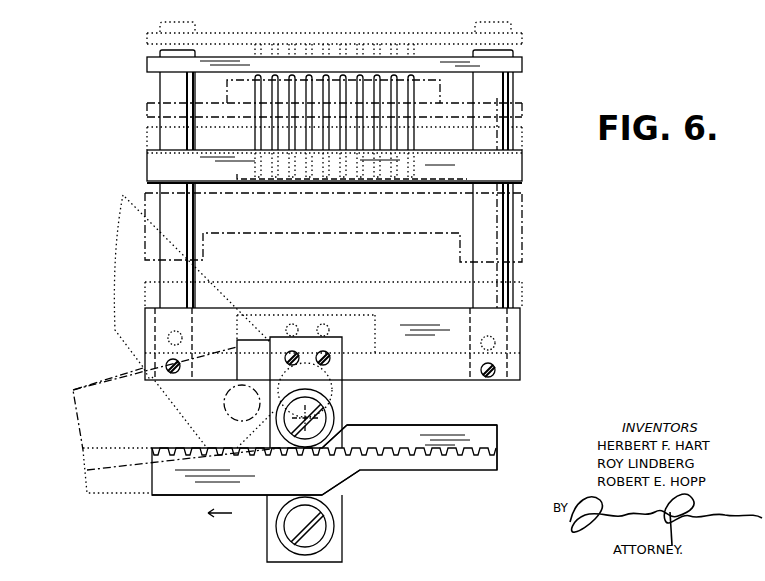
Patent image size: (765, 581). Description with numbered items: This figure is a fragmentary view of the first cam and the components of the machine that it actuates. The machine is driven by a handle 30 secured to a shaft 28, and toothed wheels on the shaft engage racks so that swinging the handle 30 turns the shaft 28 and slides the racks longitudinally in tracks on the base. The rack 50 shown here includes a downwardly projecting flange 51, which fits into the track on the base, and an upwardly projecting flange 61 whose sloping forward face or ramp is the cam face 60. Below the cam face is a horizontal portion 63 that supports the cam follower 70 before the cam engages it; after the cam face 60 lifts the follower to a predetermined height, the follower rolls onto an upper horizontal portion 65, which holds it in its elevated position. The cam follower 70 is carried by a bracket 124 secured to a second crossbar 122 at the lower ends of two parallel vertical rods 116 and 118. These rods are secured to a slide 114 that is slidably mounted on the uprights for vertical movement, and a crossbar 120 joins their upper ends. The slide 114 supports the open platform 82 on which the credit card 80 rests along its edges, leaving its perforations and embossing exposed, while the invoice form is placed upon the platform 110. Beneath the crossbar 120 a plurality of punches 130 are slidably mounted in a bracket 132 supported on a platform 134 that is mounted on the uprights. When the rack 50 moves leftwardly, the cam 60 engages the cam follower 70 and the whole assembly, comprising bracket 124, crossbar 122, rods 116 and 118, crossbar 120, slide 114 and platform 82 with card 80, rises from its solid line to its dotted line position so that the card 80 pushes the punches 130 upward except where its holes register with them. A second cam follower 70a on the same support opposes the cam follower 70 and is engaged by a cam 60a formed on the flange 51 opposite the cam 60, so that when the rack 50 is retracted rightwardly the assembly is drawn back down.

The rod 116 is at (166, 89).
The rod 118 is at (513, 88).
The crossbar 120 is at (522, 66).
The slide 114 is at (522, 170).
The second crossbar 122 is at (520, 333).
The bracket 124 is at (343, 343).
The punches 130 is at (414, 128).
The bracket 132 is at (433, 95).
The platform 134 is at (522, 110).
The platform 110 is at (522, 232).
The credit card 80 is at (428, 182).
The platform 82 is at (412, 190).
The cam follower 70 is at (334, 403).
The second cam follower 70a is at (334, 523).
The cam face 60 is at (345, 426).
The cam 60a is at (352, 476).
The upwardly projecting flange 61 is at (443, 430).
The upper horizontal portion 65 is at (485, 426).
The rack 50 is at (336, 457).
The downwardly projecting flange 51 is at (200, 490).
The horizontal portion 63 is at (165, 447).
The shaft 28 is at (226, 402).
The handle 30 is at (92, 418).